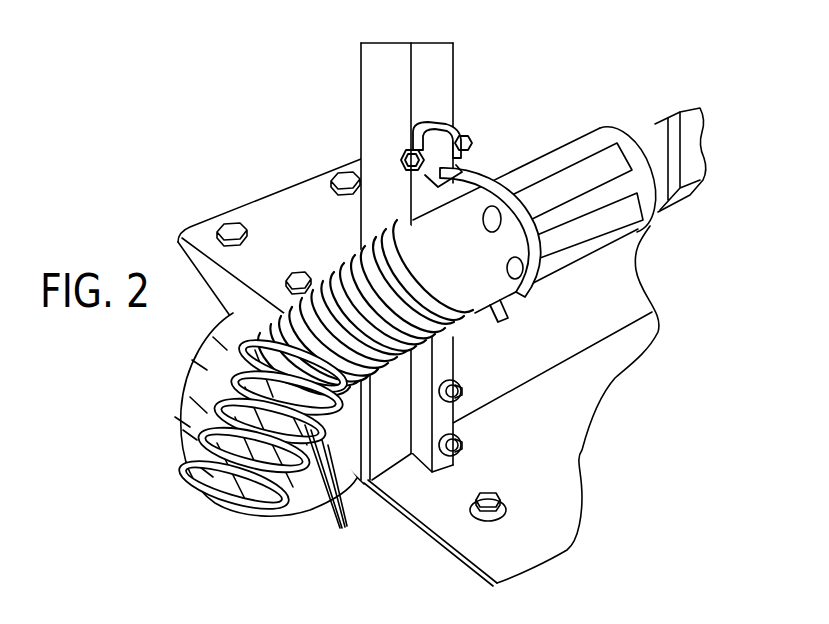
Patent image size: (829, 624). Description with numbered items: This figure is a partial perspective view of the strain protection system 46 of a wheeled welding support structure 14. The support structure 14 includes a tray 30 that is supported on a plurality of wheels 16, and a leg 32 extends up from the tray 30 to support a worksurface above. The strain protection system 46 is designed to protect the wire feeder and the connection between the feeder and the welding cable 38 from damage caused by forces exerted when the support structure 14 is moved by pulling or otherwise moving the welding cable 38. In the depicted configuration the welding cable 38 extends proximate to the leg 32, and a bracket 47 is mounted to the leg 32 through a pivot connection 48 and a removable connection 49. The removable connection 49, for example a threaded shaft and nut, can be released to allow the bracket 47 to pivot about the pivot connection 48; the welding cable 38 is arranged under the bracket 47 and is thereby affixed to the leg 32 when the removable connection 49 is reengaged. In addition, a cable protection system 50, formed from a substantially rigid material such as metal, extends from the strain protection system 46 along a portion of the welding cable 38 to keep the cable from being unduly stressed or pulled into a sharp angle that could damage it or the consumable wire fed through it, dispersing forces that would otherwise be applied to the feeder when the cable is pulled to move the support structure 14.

The support structure 14 is at (409, 242).
The wheels 16 is at (202, 368).
The tray 30 is at (457, 532).
The leg 32 is at (386, 99).
The welding cable 38 is at (250, 493).
The strain protection system 46 is at (496, 138).
The bracket 47 is at (527, 287).
The pivot connection 48 is at (467, 137).
The removable connection 49 is at (488, 340).
The cable protection system 50 is at (344, 527).